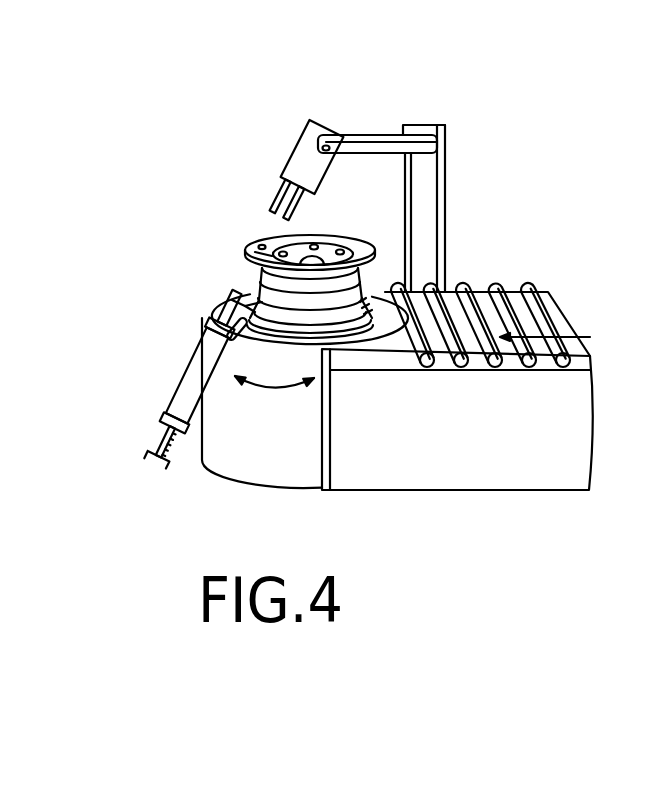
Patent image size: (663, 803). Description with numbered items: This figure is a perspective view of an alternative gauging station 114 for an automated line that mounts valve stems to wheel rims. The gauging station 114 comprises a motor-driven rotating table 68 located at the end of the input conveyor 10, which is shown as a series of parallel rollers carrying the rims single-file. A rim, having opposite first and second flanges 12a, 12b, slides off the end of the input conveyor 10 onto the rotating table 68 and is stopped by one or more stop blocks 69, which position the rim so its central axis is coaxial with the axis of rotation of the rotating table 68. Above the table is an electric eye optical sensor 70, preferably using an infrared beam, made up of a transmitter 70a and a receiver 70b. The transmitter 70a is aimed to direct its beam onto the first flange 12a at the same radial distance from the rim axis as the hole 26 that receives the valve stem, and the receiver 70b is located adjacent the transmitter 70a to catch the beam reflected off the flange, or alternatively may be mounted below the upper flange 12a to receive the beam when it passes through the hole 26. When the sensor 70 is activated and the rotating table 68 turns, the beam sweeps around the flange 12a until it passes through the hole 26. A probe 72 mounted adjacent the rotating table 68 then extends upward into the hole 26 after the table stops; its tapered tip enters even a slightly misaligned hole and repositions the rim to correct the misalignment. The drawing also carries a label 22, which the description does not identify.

The input conveyor 10 is at (573, 298).
The first flange 12a is at (478, 252).
The second flange 12b is at (457, 406).
The hub body 22 is at (391, 410).
The hole 26 is at (231, 198).
The rotating table 68 is at (500, 295).
The stop blocks 69 is at (207, 337).
The optical sensor 70 is at (363, 154).
The transmitter 70a is at (250, 141).
The receiver 70b is at (341, 191).
The probe 72 is at (167, 378).
The gauging station 114 is at (241, 266).